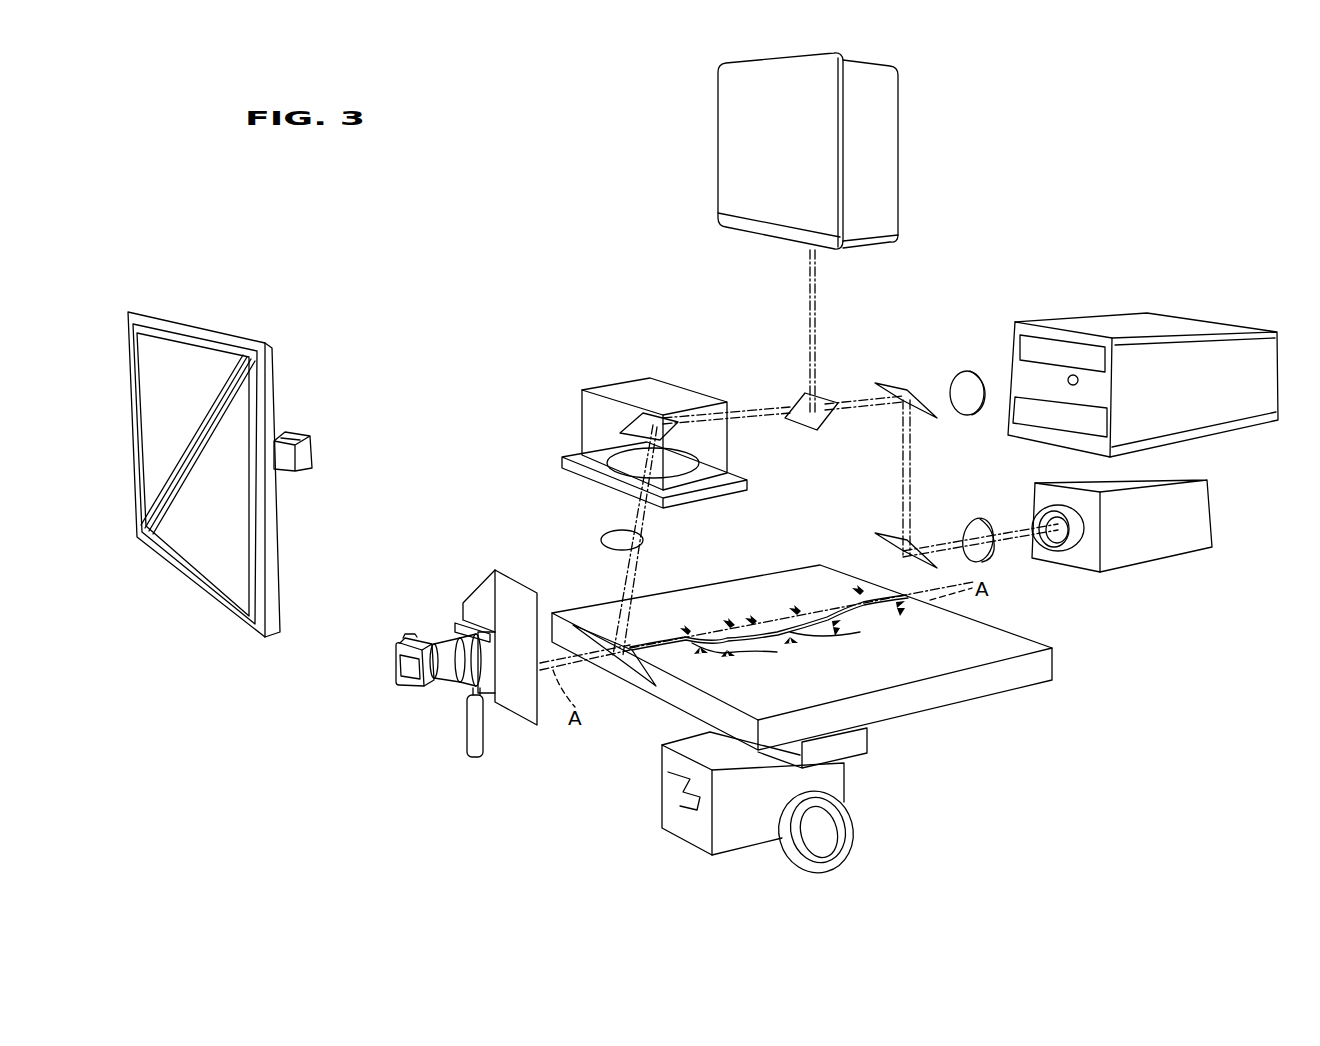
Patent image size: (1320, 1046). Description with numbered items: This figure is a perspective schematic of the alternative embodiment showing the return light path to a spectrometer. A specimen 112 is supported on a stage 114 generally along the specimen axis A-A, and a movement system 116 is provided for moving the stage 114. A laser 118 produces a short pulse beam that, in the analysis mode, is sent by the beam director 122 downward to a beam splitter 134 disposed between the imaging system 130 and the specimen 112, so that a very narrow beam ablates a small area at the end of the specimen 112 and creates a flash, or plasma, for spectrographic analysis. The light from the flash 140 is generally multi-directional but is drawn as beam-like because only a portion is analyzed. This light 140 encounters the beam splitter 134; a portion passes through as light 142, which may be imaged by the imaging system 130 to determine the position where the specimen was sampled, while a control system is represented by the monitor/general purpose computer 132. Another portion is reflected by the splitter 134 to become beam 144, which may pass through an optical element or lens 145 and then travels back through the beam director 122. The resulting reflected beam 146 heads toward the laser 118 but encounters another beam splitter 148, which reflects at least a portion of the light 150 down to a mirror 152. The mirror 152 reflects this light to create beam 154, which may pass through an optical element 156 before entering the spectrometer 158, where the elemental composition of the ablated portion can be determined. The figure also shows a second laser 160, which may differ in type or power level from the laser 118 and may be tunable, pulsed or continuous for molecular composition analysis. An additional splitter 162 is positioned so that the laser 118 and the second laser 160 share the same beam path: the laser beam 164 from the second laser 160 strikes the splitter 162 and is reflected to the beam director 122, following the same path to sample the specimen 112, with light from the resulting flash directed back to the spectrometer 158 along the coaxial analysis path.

The specimen 112 is at (827, 637).
The stage 114 is at (1028, 672).
The movement system 116 is at (828, 778).
The laser 118 is at (1172, 322).
The beam director 122 is at (603, 408).
The imaging system 130 is at (463, 672).
The monitor/general purpose computer 132 is at (238, 615).
The beam splitter 134 is at (630, 687).
The light from the flash 140 is at (637, 650).
The light passing through the splitter 142 is at (585, 672).
The beam 144 is at (612, 585).
The optical element or lens 145 is at (643, 538).
The reflected beam 146 is at (757, 395).
The beam splitter 148 is at (890, 380).
The light 150 is at (900, 478).
The mirror 152 is at (875, 542).
The beam 154 is at (945, 540).
The optical element 156 is at (997, 550).
The spectrometer 158 is at (1180, 528).
The second laser 160 is at (742, 152).
The splitter 162 is at (782, 410).
The laser beam 164 is at (808, 298).